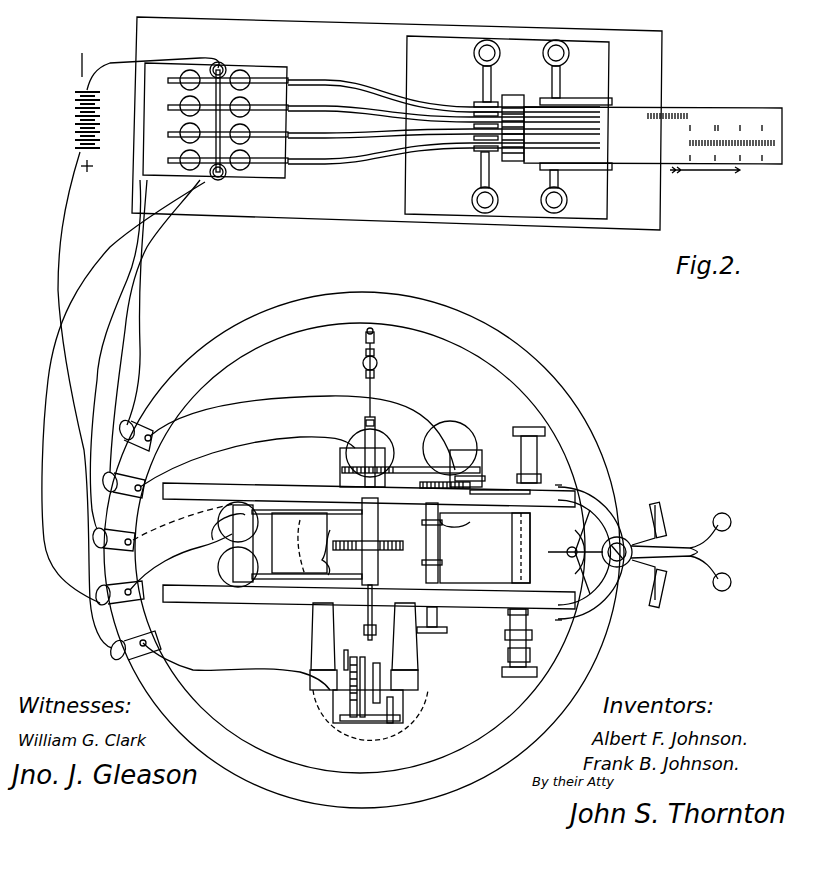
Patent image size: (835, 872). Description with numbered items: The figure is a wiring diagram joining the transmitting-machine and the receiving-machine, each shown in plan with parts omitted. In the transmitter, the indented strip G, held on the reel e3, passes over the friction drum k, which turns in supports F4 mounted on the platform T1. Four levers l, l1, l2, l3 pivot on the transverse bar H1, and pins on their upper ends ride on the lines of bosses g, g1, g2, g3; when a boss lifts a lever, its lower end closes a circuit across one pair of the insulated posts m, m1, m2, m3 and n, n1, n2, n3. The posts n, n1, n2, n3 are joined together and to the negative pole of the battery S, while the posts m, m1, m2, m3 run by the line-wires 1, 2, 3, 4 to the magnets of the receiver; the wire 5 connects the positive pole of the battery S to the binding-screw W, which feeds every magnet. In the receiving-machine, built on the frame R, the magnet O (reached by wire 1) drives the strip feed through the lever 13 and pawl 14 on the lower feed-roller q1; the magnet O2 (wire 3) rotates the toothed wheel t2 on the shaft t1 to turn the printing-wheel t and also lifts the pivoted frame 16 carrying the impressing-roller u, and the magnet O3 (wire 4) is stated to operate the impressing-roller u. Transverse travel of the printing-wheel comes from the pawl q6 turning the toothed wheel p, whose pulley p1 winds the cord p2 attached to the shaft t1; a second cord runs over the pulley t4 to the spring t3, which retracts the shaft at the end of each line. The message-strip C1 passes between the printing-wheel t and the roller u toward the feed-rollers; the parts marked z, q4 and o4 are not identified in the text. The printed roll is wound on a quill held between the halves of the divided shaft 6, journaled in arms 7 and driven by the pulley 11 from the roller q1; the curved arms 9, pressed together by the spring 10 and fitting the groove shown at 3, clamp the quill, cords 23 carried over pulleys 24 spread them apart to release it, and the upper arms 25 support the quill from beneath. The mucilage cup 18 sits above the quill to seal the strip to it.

The line-wire 1 is at (230, 453).
The line-wire 2 is at (200, 624).
The line-wire 3 is at (505, 623).
The line-wire 4 is at (129, 392).
The line-wire 5 is at (85, 400).
The divided shaft 6 is at (497, 646).
The arms 7 is at (523, 552).
The curved arms 9 is at (593, 552).
The spring 10 is at (681, 552).
The pulley 11 is at (531, 626).
The lever 13 is at (436, 481).
The pawl 14 is at (492, 490).
The pivoted frame 16 is at (369, 546).
The mucilage cup 18 is at (520, 548).
The cords 23 is at (663, 552).
The pulleys 24 is at (665, 555).
The upper pair of arms 25 is at (575, 552).
The battery S is at (72, 112).
The platform T1 is at (397, 123).
The post m is at (150, 82).
The post m1 is at (180, 103).
The post m2 is at (196, 126).
The post m3 is at (179, 162).
The post n is at (247, 75).
The post n1 is at (249, 103).
The post n2 is at (249, 130).
The post n3 is at (249, 156).
The lever l is at (444, 96).
The lever l1 is at (444, 111).
The lever l2 is at (444, 128).
The lever l3 is at (444, 155).
The transverse bar H1 is at (495, 126).
The supports F4 is at (576, 126).
The drum k is at (518, 118).
The strip G is at (653, 126).
The line of bosses g is at (654, 116).
The line of bosses g1 is at (706, 128).
The line of bosses g2 is at (714, 142).
The line of bosses g3 is at (707, 156).
The binding-screw W is at (126, 540).
The frame R is at (362, 550).
The reel e3 is at (195, 544).
The case C' C1 is at (297, 543).
The electro-magnet O3 is at (222, 531).
The impressing-roller u is at (376, 541).
The printing-wheel t is at (371, 539).
The spring z is at (324, 552).
The lower feed-roller q1 is at (427, 568).
The box q⁴ q4 is at (485, 548).
The electro-magnet O2 is at (452, 474).
The electro-magnet O is at (370, 458).
The toothed wheel t2 is at (342, 470).
The shaft t1 is at (377, 491).
The pulley t4 is at (375, 365).
The spring t3 is at (377, 335).
The feet o⁴ o4 is at (364, 671).
The toothed wheel p is at (349, 687).
The pulley p1 is at (383, 679).
The cord p2 is at (341, 656).
The pawl q6 is at (370, 729).